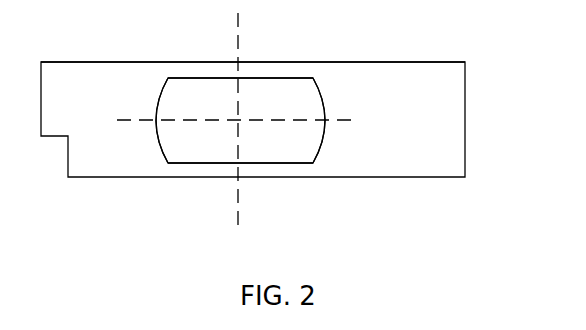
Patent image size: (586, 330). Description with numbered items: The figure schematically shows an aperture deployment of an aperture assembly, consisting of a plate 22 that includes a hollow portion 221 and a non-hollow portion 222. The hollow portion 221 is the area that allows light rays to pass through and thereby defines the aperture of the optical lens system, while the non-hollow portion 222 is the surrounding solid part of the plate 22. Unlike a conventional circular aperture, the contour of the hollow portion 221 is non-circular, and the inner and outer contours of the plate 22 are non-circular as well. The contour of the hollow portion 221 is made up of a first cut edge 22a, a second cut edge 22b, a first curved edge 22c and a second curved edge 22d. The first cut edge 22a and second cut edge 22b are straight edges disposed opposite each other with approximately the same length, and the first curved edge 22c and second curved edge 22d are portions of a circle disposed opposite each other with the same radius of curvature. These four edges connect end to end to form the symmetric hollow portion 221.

The plate 22 is at (438, 62).
The hollow portion 221 is at (287, 90).
The non-hollow portion 222 is at (398, 82).
The first cut edge 22a is at (203, 78).
The second cut edge 22b is at (198, 165).
The first curved edge 22c is at (158, 97).
The second curved edge 22d is at (323, 88).